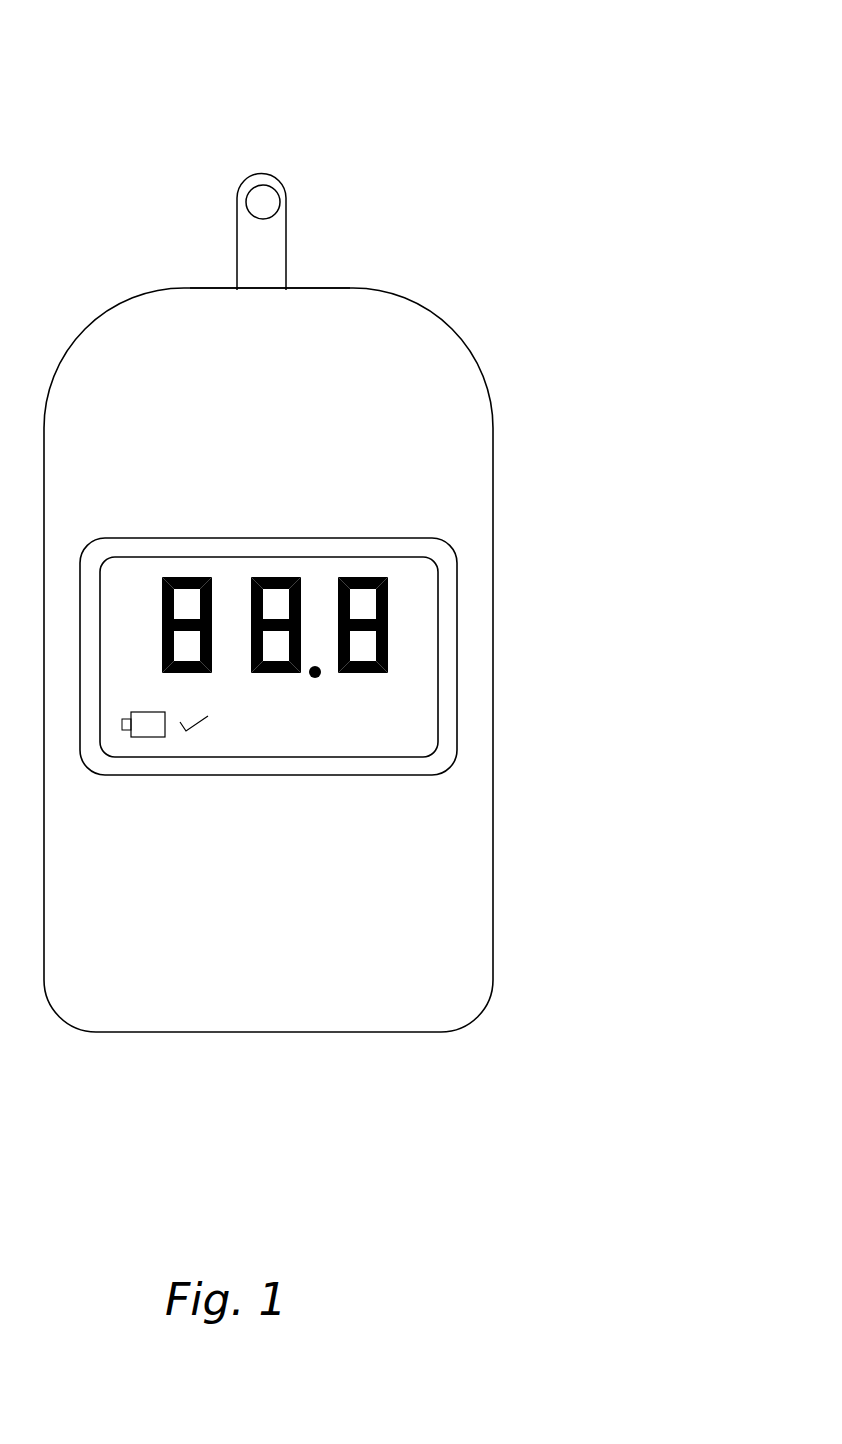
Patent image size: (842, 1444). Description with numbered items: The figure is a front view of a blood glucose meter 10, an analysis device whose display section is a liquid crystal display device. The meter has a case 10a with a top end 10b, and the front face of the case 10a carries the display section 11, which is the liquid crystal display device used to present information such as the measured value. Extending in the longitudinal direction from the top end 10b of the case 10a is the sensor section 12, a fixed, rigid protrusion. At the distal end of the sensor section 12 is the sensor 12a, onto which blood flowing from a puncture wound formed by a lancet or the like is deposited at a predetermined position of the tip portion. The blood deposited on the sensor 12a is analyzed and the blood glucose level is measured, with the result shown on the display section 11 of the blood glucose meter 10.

The blood glucose meter 10 is at (317, 516).
The case 10a is at (493, 457).
The top end 10b is at (332, 290).
The display section 11 is at (470, 542).
The sensor section 12 is at (252, 182).
The sensor 12a is at (265, 200).